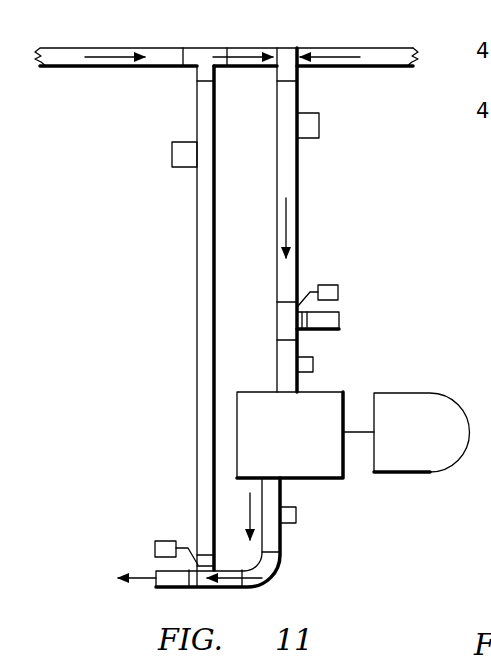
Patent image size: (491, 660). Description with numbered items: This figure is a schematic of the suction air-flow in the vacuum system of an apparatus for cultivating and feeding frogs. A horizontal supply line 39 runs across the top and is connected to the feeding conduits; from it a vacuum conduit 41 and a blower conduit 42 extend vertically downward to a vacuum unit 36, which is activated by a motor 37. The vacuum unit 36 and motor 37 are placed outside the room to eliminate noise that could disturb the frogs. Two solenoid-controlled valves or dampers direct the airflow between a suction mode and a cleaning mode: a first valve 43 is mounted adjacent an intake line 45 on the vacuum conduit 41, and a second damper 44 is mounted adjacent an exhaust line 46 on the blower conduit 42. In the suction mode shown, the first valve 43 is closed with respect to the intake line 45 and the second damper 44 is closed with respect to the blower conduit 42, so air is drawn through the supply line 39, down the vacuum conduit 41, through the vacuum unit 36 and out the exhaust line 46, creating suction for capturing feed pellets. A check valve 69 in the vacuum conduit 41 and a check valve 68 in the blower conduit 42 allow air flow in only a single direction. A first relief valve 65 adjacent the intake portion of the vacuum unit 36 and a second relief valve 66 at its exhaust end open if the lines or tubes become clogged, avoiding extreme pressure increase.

The supply line 39 is at (148, 48).
The vacuum conduit 41 is at (297, 212).
The blower conduit 42 is at (197, 250).
The vacuum unit 36 is at (328, 479).
The motor 37 is at (400, 393).
The first valve 43 is at (330, 285).
The second damper 44 is at (165, 541).
The intake line 45 is at (340, 315).
The exhaust line 46 is at (156, 569).
The first relief valve 65 is at (313, 365).
The second relief valve 66 is at (293, 523).
The check valve 68 is at (172, 142).
The check valve 69 is at (320, 114).